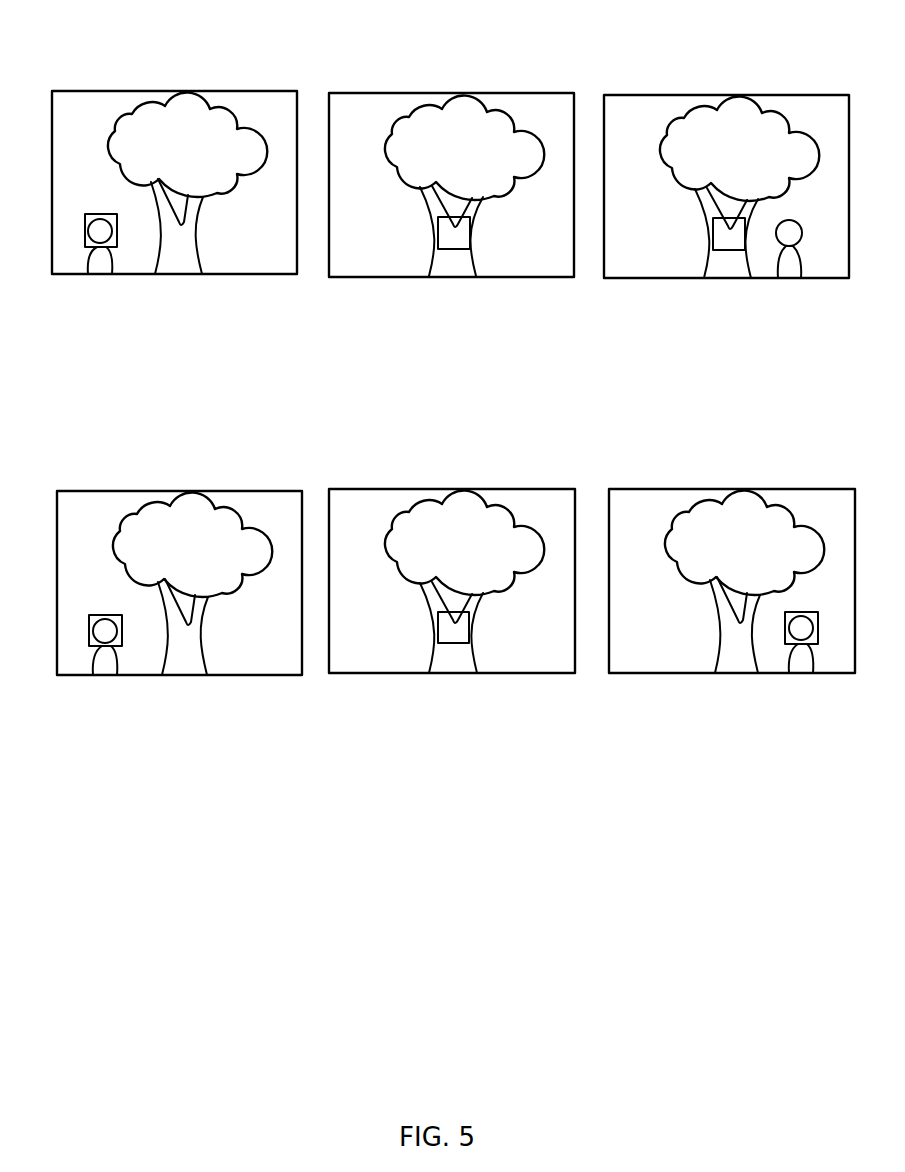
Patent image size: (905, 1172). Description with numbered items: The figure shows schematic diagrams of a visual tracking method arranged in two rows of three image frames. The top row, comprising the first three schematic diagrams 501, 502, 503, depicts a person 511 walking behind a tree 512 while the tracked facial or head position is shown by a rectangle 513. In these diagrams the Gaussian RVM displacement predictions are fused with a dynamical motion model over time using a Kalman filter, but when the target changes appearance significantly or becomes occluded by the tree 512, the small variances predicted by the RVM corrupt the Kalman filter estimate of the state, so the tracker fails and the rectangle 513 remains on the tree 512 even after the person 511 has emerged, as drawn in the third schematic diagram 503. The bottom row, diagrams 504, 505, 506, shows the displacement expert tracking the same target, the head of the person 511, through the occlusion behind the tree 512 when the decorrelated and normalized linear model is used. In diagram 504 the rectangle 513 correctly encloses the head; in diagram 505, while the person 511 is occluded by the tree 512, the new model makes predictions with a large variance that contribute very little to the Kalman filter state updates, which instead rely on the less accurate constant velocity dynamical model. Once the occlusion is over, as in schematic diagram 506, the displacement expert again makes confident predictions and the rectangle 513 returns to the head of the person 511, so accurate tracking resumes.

The first schematic diagram 501 is at (156, 180).
The second schematic diagram 502 is at (451, 202).
The third schematic diagram 503 is at (726, 203).
The fourth schematic diagram 504 is at (179, 601).
The fifth schematic diagram 505 is at (452, 600).
The sixth schematic diagram 506 is at (732, 600).
The person 511 is at (98, 275).
The tree 512 is at (184, 103).
The rectangle 513 is at (85, 214).